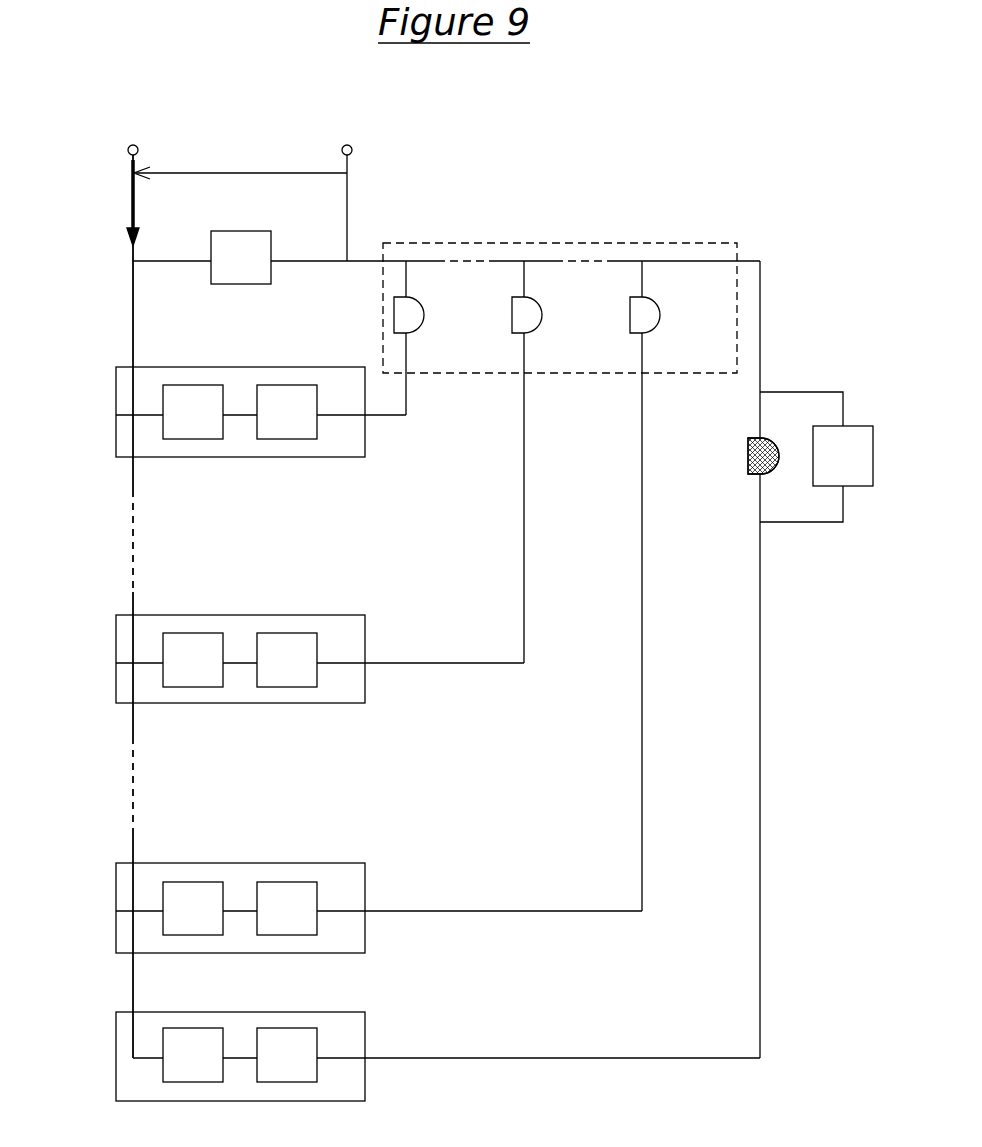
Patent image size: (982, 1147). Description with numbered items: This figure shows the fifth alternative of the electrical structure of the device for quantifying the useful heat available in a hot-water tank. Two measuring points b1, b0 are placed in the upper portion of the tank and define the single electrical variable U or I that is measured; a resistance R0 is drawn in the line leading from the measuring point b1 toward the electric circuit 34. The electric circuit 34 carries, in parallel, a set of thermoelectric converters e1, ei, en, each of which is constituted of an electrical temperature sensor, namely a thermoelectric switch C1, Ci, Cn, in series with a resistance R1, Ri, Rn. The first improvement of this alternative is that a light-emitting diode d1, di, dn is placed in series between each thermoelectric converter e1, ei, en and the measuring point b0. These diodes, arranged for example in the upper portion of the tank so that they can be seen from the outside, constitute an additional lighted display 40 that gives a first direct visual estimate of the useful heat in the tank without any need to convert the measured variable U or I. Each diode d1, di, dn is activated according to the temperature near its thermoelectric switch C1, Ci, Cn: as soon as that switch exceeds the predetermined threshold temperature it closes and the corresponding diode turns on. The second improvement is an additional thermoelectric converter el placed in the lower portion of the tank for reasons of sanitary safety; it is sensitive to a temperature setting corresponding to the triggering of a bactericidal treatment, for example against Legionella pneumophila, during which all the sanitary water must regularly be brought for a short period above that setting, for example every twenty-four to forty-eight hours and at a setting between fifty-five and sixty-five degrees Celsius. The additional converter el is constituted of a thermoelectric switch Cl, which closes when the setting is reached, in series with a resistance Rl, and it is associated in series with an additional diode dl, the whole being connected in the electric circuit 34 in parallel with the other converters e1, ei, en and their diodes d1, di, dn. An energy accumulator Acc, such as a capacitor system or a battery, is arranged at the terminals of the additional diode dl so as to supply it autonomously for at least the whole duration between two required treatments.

The electric circuit 34 is at (132, 550).
The lighted display 40 is at (583, 243).
The measuring point b1 is at (131, 132).
The measuring point b0 is at (357, 185).
The measured electrical variable U is at (240, 161).
The measured electrical variable I is at (126, 203).
The resistor R0 is at (241, 257).
The light-emitting diode d1 is at (424, 319).
The light-emitting diode di is at (542, 319).
The light-emitting diode dn is at (660, 319).
The additional diode dl is at (746, 455).
The energy accumulator Acc is at (843, 456).
The thermoelectric converter e1 is at (229, 412).
The thermoelectric converter ei is at (288, 659).
The thermoelectric converter en is at (347, 908).
The additional thermoelectric converter el is at (406, 1056).
The thermoelectric switch C1 is at (193, 412).
The resistance R1 is at (287, 412).
The thermoelectric switch Ci is at (193, 660).
The resistance Ri is at (287, 660).
The thermoelectric switch Cn is at (193, 908).
The resistance Rn is at (287, 908).
The thermoelectric switch Cl is at (193, 1055).
The resistance Rl is at (287, 1055).